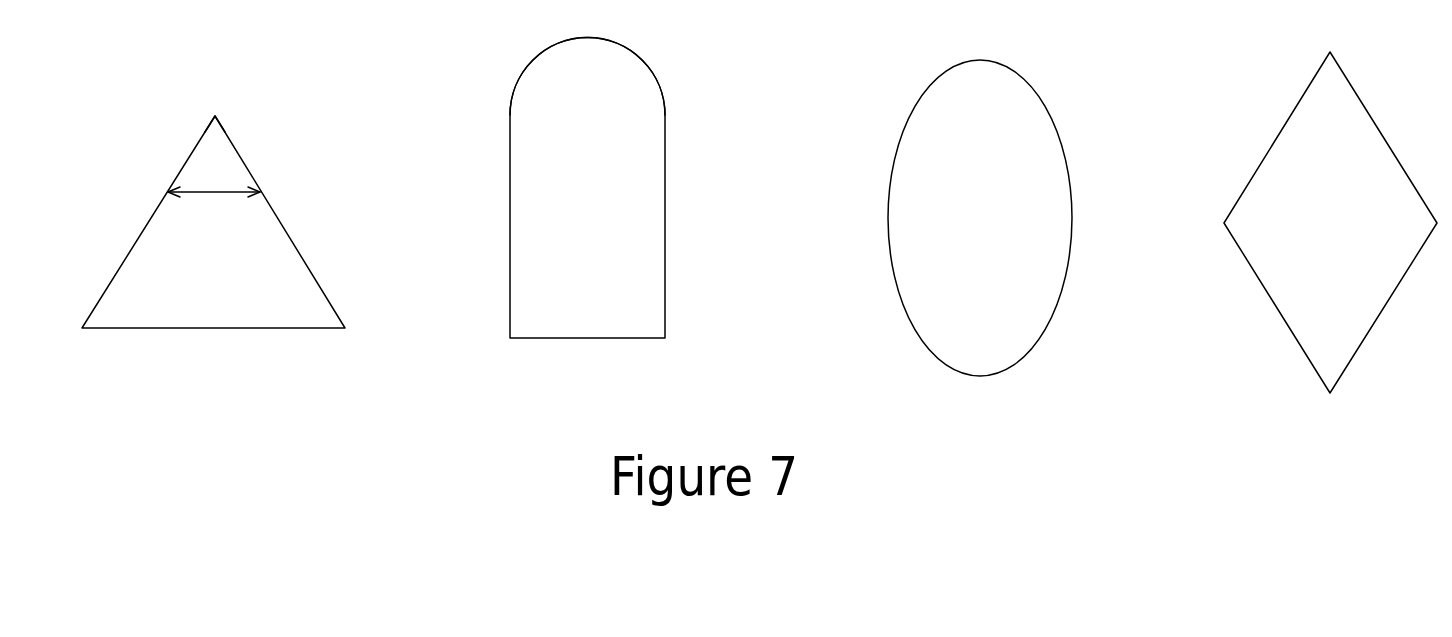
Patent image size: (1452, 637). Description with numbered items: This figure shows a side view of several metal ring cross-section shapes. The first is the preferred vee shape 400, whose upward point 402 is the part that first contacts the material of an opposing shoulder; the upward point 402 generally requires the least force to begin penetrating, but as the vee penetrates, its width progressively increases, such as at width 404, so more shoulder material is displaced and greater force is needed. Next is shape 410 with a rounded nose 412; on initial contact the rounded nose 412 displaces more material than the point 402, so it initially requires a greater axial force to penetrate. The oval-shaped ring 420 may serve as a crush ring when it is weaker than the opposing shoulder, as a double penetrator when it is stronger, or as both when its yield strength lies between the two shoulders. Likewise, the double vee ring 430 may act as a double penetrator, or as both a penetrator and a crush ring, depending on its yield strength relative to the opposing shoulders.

The vee shape 400 is at (217, 277).
The upward point 402 is at (214, 117).
The width 404 is at (213, 193).
The round nose shape 410 is at (588, 300).
The rounded nose 412 is at (588, 38).
The oval-shaped ring 420 is at (972, 318).
The double vee ring 430 is at (1317, 288).